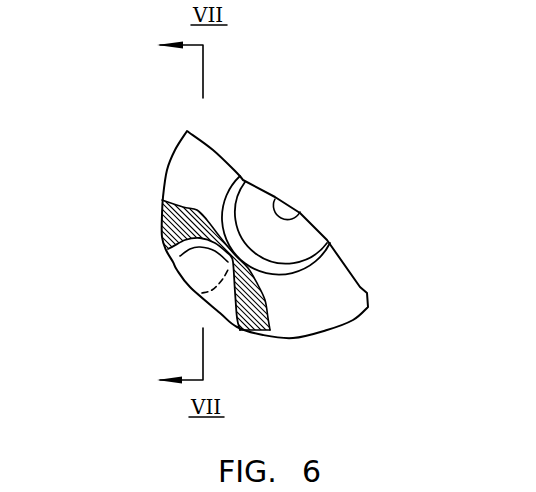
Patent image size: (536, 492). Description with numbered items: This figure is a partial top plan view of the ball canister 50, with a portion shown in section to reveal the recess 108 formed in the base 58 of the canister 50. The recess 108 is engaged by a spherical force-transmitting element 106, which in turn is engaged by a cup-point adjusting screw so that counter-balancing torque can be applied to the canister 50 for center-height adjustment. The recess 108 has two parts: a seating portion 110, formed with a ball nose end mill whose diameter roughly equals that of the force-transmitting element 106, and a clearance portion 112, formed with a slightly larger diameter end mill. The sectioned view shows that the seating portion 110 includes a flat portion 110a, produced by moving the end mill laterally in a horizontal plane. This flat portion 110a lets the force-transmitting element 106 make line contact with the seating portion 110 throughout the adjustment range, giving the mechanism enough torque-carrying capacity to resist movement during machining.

The ball canister 50 is at (305, 341).
The base 58 is at (193, 160).
The spherical force-transmitting element 106 is at (180, 278).
The recess 108 is at (178, 323).
The seating portion 110 is at (197, 234).
The flat portion 110a is at (163, 218).
The clearance portion 112 is at (231, 329).